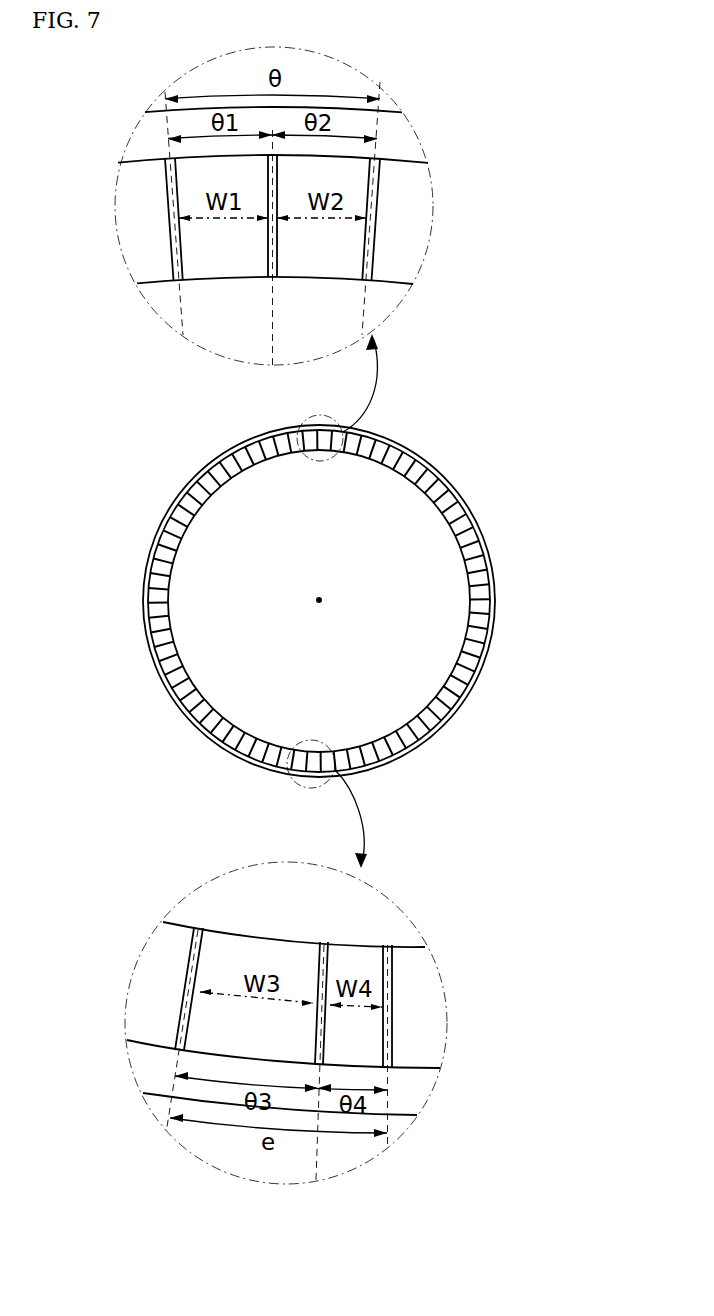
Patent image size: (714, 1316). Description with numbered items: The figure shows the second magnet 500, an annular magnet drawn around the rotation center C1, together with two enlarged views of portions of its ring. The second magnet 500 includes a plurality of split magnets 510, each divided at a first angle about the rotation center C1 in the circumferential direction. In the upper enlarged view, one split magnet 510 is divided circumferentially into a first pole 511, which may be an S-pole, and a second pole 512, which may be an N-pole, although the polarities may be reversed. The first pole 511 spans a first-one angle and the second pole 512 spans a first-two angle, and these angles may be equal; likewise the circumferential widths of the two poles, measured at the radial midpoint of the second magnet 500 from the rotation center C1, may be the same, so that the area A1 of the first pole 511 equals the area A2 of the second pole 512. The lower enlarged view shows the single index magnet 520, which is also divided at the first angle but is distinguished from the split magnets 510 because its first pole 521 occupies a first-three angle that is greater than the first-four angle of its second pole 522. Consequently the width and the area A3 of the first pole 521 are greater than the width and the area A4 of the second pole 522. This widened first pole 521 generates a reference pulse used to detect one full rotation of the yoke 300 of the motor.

The yoke 300 is at (495, 552).
The second magnet 500 is at (495, 603).
The split magnet 510 is at (363, 284).
The first pole 511 is at (190, 168).
The second pole 512 is at (349, 172).
The index magnet 520 is at (383, 943).
The first pole 521 is at (215, 949).
The second pole 522 is at (359, 957).
The rotation center C1 is at (319, 600).
The area of the first pole A1 is at (222, 264).
The area of the second pole A2 is at (323, 265).
The area of the first pole A3 is at (204, 1036).
The area of the second pole A4 is at (366, 1051).